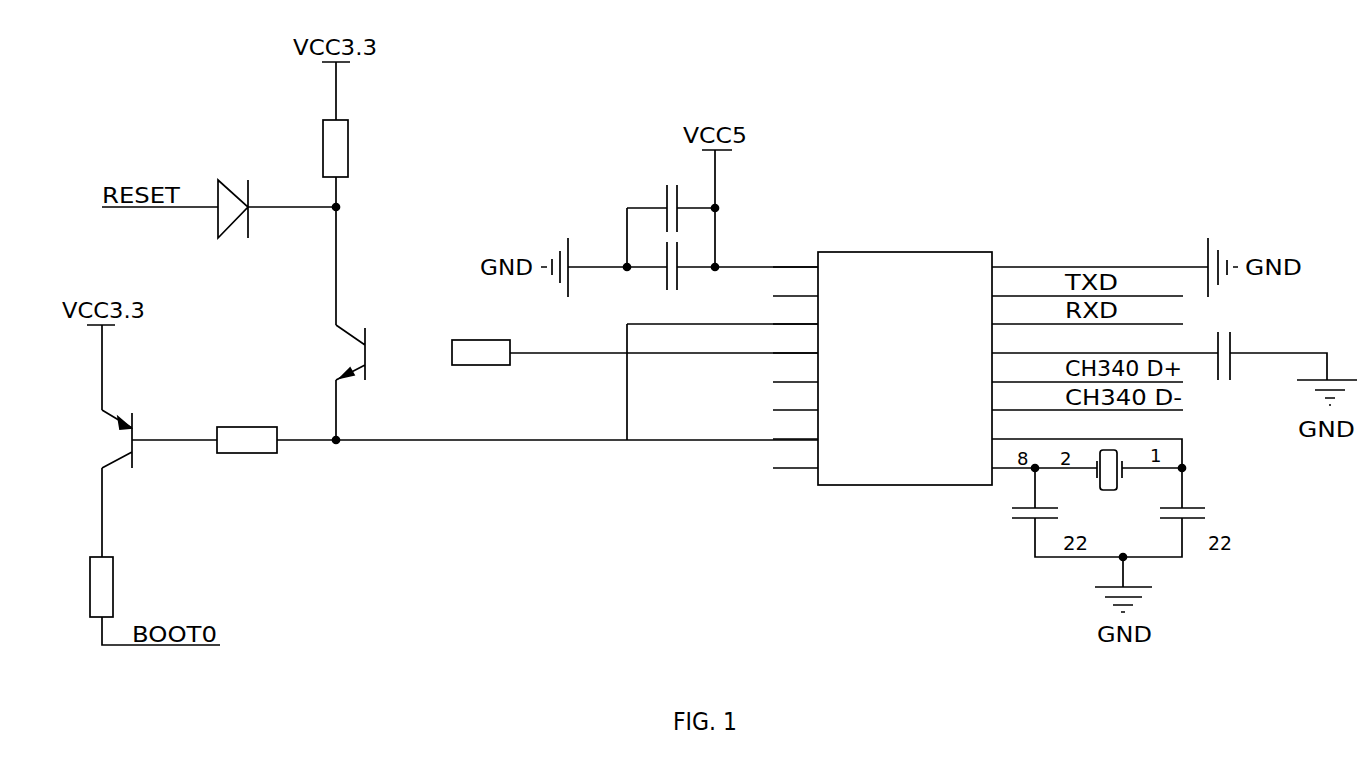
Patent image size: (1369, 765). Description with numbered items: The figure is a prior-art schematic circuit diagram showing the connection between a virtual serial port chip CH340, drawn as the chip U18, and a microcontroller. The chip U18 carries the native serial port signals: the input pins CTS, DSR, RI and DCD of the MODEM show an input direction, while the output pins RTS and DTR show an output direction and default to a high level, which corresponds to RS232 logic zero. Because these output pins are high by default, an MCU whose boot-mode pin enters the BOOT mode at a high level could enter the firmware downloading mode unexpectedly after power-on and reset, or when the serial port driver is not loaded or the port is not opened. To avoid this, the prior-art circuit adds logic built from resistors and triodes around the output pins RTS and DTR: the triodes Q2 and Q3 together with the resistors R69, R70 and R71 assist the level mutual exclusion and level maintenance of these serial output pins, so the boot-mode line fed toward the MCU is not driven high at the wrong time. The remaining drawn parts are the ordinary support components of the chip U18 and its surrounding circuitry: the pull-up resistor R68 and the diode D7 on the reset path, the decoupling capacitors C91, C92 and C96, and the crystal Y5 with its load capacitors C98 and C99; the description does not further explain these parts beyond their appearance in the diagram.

The pull-up resistor R68 is at (356, 148).
The diode 1N4148 D7 is at (274, 197).
The triode Q2 is at (368, 352).
The triode Q3 is at (135, 440).
The resistor R69 is at (502, 347).
The resistor R70 is at (218, 435).
The resistor R71 is at (121, 587).
The USB to serial chip CH340 U18 is at (899, 355).
The capacitor C91 is at (676, 195).
The capacitor C92 is at (676, 283).
The capacitor C96 is at (1250, 354).
The crystal oscillator Y5 is at (1125, 474).
The load capacitor 22pF C98 is at (1058, 513).
The load capacitor 22pF C99 is at (1205, 513).